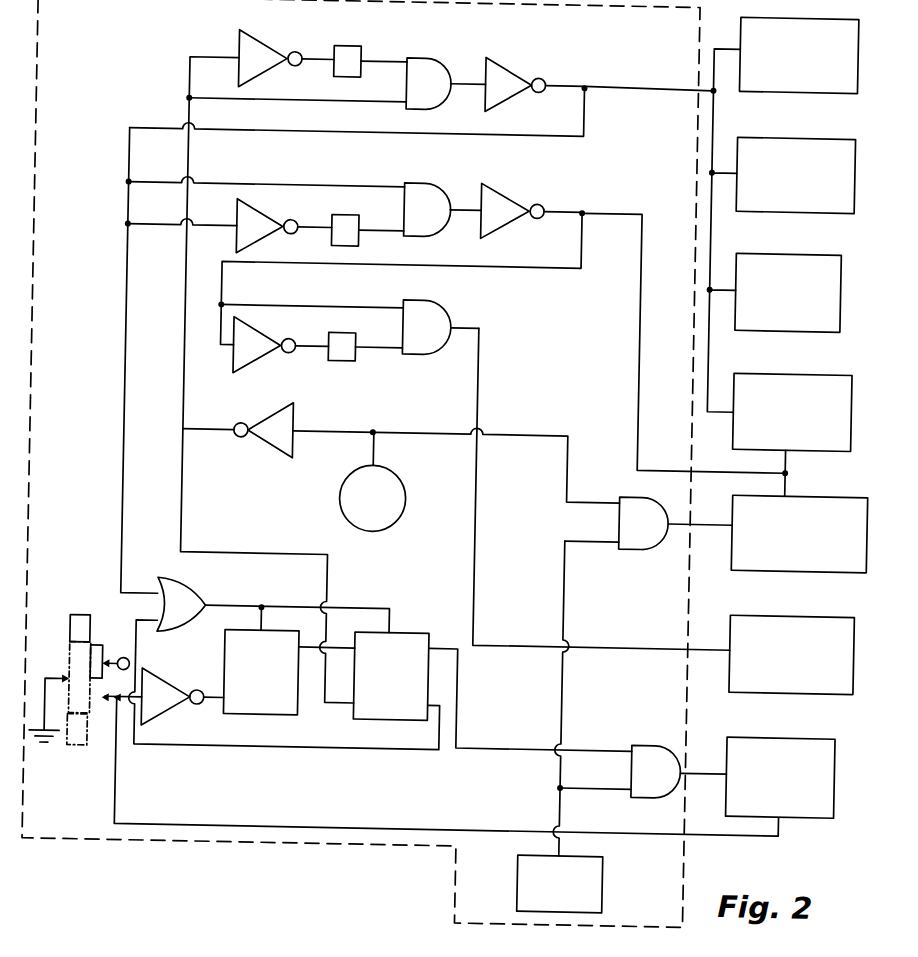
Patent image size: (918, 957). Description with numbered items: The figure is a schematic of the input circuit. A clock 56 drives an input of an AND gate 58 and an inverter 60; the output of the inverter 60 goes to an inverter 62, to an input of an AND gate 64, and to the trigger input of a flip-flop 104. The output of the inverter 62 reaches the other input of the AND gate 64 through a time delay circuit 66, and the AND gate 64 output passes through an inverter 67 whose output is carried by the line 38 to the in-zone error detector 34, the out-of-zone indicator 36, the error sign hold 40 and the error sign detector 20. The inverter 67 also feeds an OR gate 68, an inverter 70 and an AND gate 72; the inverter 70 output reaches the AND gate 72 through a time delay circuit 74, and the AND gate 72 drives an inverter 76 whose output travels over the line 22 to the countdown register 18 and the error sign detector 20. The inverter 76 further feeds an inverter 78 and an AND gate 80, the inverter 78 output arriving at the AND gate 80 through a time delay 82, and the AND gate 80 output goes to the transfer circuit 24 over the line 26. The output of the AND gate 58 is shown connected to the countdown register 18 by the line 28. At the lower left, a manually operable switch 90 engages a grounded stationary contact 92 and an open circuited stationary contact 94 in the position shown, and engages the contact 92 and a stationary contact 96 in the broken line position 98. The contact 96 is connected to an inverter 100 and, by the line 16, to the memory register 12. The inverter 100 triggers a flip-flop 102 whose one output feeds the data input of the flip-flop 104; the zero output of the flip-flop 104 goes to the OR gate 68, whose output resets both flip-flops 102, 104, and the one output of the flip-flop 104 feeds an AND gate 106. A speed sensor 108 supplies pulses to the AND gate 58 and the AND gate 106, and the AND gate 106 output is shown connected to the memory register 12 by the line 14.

The memory register 12 is at (833, 738).
The connection to memory register 14 is at (709, 765).
The line 16 is at (639, 829).
The countdown register 18 is at (835, 493).
The error sign detector 20 is at (833, 375).
The line 22 is at (673, 466).
The transfer circuit 24 is at (843, 611).
The line 26 is at (647, 644).
The count input line 28 is at (681, 523).
The in-zone error detector 34 is at (835, 53).
The out-of-zone indicator 36 is at (833, 130).
The line 38 is at (651, 86).
The error sign hold 40 is at (838, 273).
The clock 56 is at (338, 489).
The AND gate 58 is at (639, 542).
The inverter 60 is at (297, 411).
The inverter 62 is at (262, 55).
The AND gate 64 is at (422, 71).
The time delay circuit 66 is at (349, 49).
The inverter 67 is at (503, 82).
The OR gate 68 is at (207, 605).
The inverter 70 is at (275, 218).
The AND gate 72 is at (415, 194).
The time delay circuit 74 is at (356, 245).
The inverter 76 is at (500, 209).
The inverter 78 is at (248, 366).
The AND gate 80 is at (445, 322).
The time delay 82 is at (354, 360).
The manually operable switch 90 is at (81, 622).
The grounded stationary contact 92 is at (56, 686).
The open circuited stationary contact 94 is at (121, 664).
The stationary contact 96 is at (120, 709).
The broken line position 98 is at (85, 754).
The inverter 100 is at (174, 696).
The flip-flop 102 is at (303, 720).
The flip-flop 104 is at (413, 636).
The AND gate 106 is at (656, 760).
The speed sensor 108 is at (608, 875).